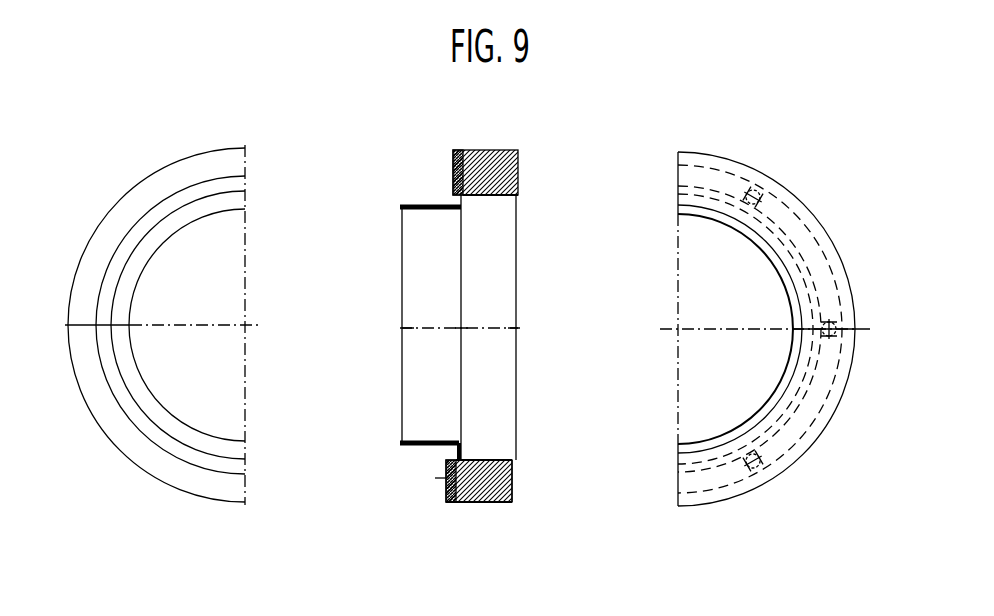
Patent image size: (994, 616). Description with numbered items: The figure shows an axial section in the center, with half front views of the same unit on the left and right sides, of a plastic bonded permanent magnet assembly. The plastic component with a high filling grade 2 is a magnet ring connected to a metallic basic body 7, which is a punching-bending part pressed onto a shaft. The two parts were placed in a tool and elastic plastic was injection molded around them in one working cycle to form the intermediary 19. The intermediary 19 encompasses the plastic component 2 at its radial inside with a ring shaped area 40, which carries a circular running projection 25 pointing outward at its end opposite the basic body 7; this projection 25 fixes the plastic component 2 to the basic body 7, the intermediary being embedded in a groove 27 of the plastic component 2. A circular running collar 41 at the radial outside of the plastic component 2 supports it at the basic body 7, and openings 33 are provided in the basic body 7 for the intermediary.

The plastic component with a high filling grade 2 is at (195, 178).
The basic body 7 is at (188, 232).
The intermediary 19 is at (152, 195).
The projection 25 is at (125, 255).
The groove 27 is at (518, 186).
The openings 33 is at (758, 180).
The ring shaped area 40 is at (480, 458).
The collar 41 is at (462, 500).